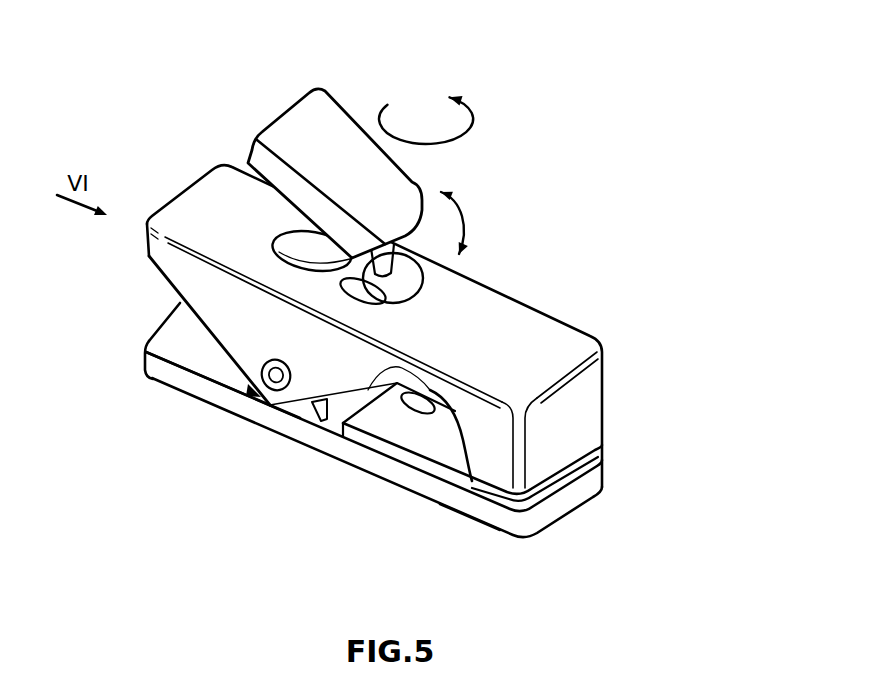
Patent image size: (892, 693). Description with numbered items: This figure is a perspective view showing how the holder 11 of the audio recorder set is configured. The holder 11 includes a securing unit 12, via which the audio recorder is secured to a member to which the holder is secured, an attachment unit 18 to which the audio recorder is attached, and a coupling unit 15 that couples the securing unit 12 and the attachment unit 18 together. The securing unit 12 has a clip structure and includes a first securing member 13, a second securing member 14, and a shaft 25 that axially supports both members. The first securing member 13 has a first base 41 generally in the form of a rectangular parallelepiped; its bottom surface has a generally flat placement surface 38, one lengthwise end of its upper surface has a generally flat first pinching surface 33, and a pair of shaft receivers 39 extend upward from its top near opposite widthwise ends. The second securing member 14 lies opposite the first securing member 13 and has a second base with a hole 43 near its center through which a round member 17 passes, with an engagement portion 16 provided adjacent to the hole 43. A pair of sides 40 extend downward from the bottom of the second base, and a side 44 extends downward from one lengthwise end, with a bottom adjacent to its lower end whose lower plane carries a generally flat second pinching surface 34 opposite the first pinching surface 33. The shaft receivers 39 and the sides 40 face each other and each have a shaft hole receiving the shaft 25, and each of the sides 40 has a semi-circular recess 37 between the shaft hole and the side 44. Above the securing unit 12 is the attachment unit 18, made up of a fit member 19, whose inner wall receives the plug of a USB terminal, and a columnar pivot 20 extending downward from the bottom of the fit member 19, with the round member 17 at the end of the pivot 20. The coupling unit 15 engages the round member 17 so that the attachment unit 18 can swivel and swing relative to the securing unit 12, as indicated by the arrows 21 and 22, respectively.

The holder 11 is at (367, 310).
The securing unit 12 is at (423, 351).
The first securing member 13 is at (657, 415).
The second securing member 14 is at (603, 420).
The coupling unit 15 is at (483, 277).
The engagement portion 16 is at (376, 304).
The round member 17 is at (400, 292).
The attachment unit 18 is at (314, 143).
The fit member 19 is at (335, 152).
The pivot 20 is at (277, 246).
The arrow 21 is at (471, 120).
The arrow 22 is at (471, 218).
The shaft 25 is at (275, 392).
The first pinching surface 33 is at (435, 446).
The second pinching surface 34 is at (482, 502).
The semi-circular recess 37 is at (375, 396).
The placement surface 38 is at (453, 524).
The shaft receiver 39 is at (318, 412).
The side 40 is at (262, 335).
The first base 41 is at (181, 383).
The hole 43 is at (301, 256).
The side 44 is at (580, 392).